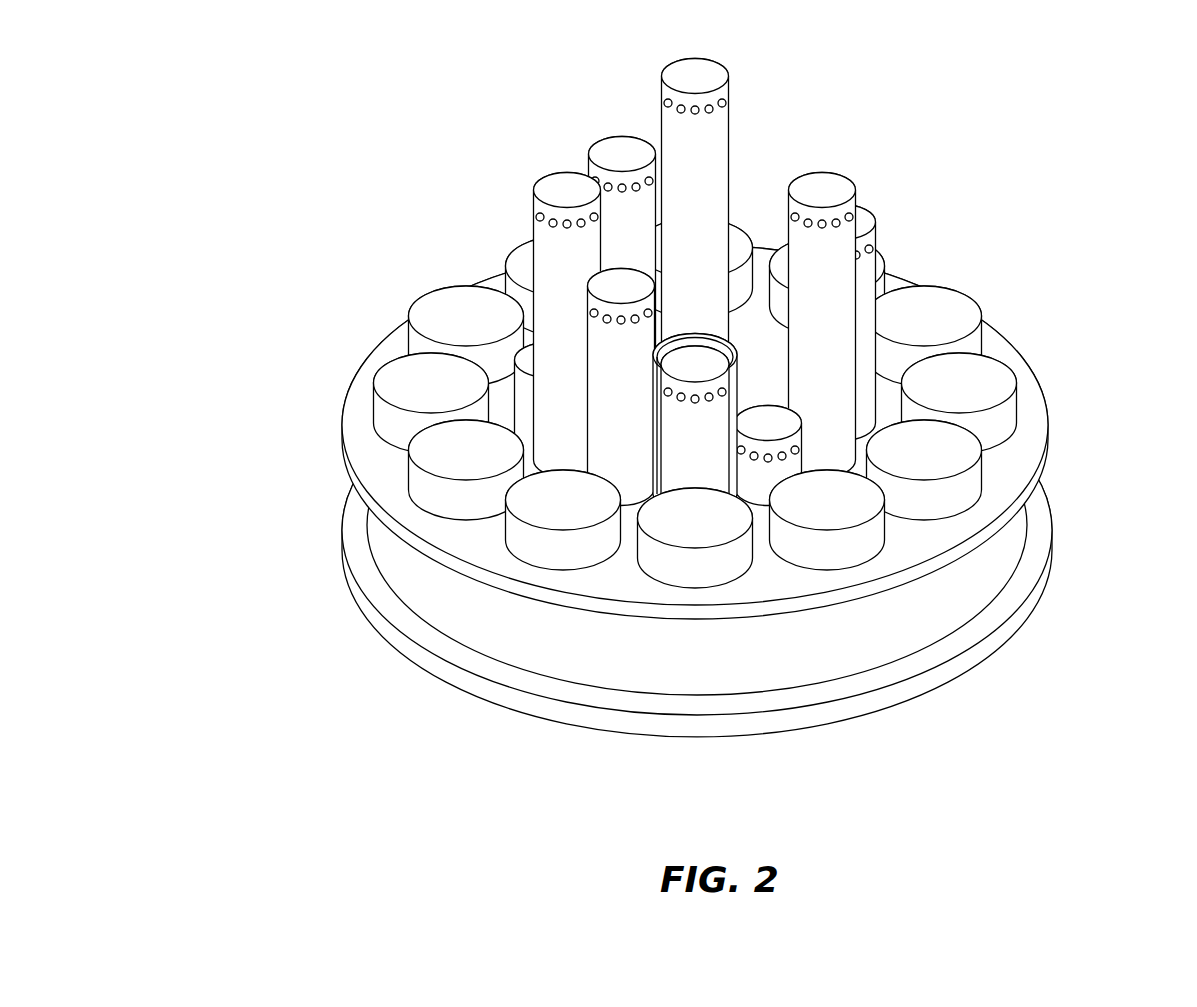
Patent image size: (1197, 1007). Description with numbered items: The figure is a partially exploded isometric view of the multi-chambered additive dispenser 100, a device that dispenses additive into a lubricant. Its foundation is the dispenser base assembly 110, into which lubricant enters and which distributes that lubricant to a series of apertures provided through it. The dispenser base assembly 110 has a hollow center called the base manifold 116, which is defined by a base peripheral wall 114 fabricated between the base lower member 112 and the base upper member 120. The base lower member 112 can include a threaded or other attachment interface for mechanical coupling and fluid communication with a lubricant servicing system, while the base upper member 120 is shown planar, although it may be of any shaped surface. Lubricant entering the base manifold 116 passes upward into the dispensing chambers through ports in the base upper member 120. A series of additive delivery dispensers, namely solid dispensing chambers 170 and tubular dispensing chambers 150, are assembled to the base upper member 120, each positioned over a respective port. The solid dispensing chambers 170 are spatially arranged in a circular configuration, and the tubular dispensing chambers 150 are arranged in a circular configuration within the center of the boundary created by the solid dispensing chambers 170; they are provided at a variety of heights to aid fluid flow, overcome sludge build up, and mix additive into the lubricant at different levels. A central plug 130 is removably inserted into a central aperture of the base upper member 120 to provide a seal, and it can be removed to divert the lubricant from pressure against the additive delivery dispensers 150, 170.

The multi-chambered additive dispenser 100 is at (691, 392).
The dispenser base assembly 110 is at (681, 544).
The base lower member 112 is at (404, 675).
The base peripheral wall 114 is at (990, 642).
The base manifold 116 is at (962, 583).
The base upper member 120 is at (770, 608).
The central plug 130 is at (758, 385).
The tubular dispensing chamber 150 is at (840, 323).
The solid dispensing chamber 170 is at (975, 350).